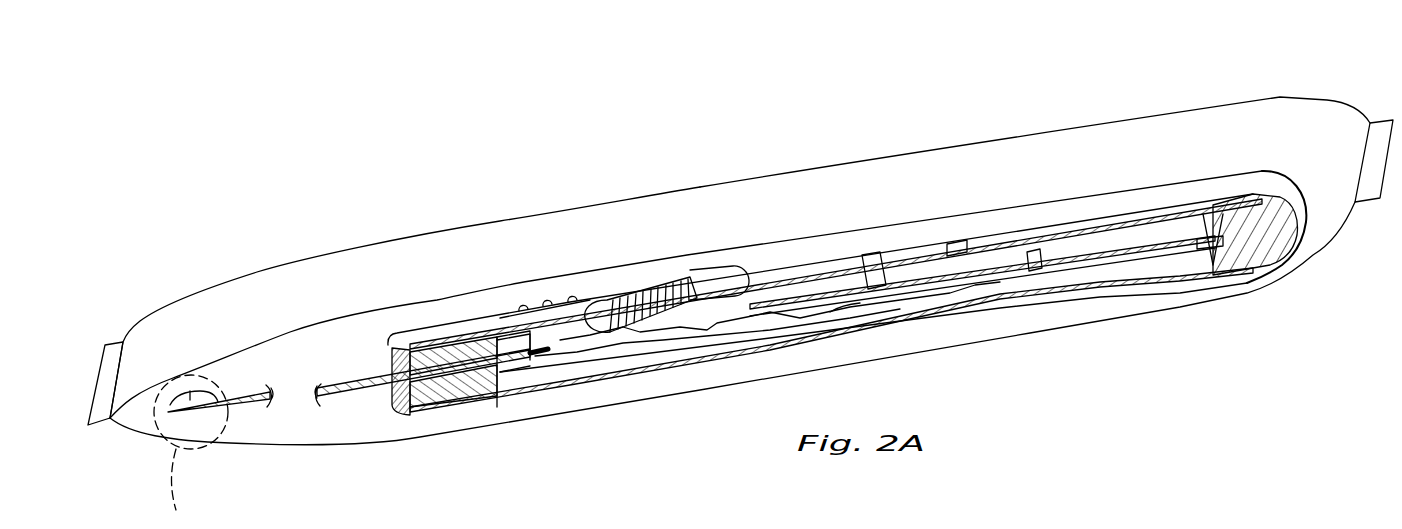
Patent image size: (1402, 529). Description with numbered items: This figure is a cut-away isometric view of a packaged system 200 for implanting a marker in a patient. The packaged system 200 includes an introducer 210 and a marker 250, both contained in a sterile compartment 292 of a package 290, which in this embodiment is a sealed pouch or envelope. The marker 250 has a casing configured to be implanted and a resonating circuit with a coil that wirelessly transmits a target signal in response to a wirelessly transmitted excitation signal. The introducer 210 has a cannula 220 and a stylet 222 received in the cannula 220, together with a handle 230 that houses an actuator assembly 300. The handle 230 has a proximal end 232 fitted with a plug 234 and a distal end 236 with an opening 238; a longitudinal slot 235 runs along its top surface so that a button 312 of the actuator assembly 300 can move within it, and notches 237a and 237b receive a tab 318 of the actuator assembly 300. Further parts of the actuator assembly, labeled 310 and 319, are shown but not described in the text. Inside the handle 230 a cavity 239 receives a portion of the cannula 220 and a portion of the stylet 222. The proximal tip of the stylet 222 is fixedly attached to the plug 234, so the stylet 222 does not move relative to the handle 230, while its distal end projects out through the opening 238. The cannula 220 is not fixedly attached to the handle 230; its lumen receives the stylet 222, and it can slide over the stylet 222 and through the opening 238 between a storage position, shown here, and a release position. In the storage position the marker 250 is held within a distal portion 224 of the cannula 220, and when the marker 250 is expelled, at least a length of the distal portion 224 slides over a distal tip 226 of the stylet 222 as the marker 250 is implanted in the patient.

The packaged system 200 is at (476, 161).
The introducer 210 is at (1325, 229).
The cannula 220 is at (352, 387).
The stylet 222 is at (355, 397).
The distal portion 224 is at (190, 392).
The distal tip 226 is at (229, 400).
The handle 230 is at (1163, 213).
The proximal end 232 is at (1252, 200).
The plug 234 is at (1270, 245).
The longitudinal slot 235 is at (815, 262).
The distal end 236 is at (388, 358).
The notch 237a is at (847, 255).
The notch 237b is at (945, 250).
The opening 238 is at (390, 370).
The cavity 239 is at (1120, 272).
The marker 250 is at (208, 430).
The package 290 is at (1100, 118).
The sterile compartment 292 is at (1303, 190).
The actuator assembly 300 is at (762, 263).
The drive tube 310 is at (790, 287).
The button 312 is at (698, 282).
The tab 318 is at (884, 255).
The stop 319 is at (1024, 250).